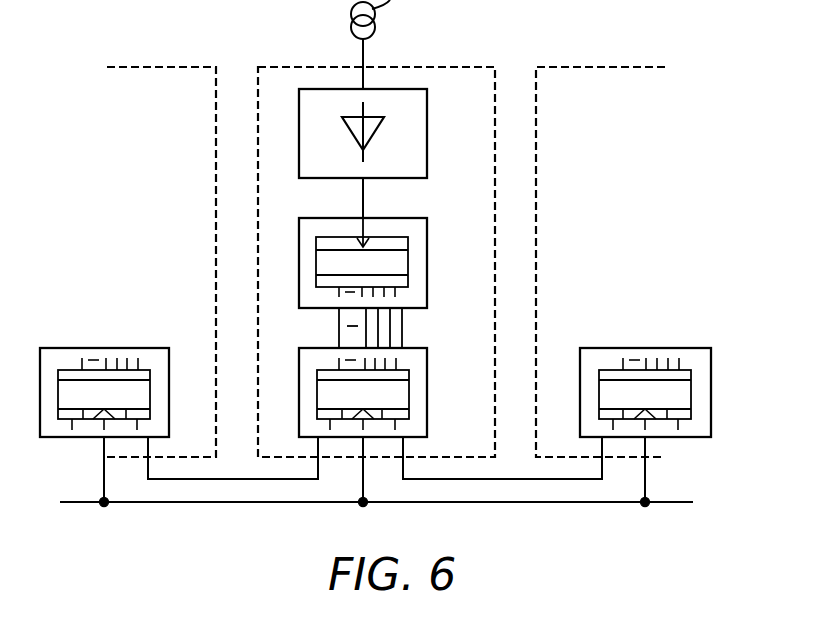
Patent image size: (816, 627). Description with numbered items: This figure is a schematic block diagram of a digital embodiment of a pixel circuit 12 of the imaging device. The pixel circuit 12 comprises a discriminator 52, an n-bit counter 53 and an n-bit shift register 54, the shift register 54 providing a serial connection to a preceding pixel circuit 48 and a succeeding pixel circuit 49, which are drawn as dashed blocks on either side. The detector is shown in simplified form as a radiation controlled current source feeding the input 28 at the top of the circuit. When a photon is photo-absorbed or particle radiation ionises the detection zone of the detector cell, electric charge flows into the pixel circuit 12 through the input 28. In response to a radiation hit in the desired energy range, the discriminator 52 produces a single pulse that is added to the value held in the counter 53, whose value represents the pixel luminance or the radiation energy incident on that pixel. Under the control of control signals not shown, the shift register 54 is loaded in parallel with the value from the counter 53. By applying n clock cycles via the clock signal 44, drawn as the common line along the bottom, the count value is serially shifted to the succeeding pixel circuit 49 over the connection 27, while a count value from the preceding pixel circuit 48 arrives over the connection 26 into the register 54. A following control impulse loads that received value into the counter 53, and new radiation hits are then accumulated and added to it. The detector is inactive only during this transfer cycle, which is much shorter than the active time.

The pixel circuit 12 is at (486, 99).
The connection line 26 is at (242, 479).
The connection 27 is at (520, 479).
The input 28 is at (363, 50).
The clock signal 44 is at (723, 513).
The preceding pixel circuit 48 is at (205, 97).
The succeeding pixel circuit 49 is at (663, 97).
The discriminator 52 is at (427, 133).
The n-bit counter 53 is at (427, 262).
The n-bit shift register 54 is at (427, 392).